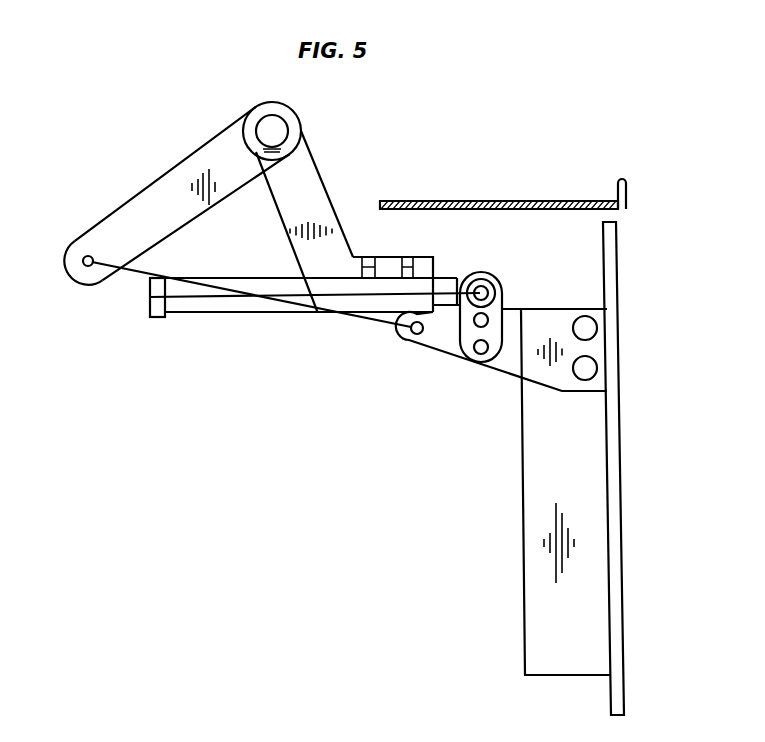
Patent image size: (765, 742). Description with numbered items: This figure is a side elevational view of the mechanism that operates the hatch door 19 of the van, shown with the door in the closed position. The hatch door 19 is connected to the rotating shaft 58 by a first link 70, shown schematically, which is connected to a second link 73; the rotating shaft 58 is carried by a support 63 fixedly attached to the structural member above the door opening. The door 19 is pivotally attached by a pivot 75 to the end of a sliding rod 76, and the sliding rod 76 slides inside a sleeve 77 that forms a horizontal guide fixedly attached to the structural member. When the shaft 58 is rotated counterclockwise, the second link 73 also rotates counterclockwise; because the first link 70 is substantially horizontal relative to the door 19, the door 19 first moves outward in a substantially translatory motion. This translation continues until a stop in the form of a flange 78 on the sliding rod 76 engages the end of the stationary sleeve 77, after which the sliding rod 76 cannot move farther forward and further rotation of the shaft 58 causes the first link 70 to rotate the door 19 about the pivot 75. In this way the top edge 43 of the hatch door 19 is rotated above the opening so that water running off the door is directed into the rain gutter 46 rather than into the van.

The hatch door 19 is at (525, 490).
The top edge 43 is at (618, 433).
The rain gutter 46 is at (584, 199).
The rotating shaft 58 is at (277, 130).
The support 63 is at (283, 232).
The first link 70 is at (135, 272).
The second link 73 is at (150, 185).
The pivot 75 is at (483, 285).
The sliding rod 76 is at (227, 313).
The sleeve 77 is at (393, 256).
The flange 78 is at (157, 318).